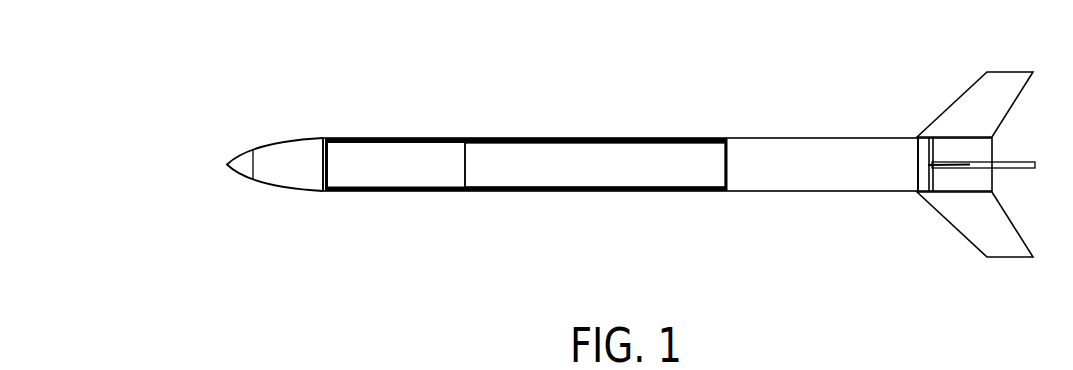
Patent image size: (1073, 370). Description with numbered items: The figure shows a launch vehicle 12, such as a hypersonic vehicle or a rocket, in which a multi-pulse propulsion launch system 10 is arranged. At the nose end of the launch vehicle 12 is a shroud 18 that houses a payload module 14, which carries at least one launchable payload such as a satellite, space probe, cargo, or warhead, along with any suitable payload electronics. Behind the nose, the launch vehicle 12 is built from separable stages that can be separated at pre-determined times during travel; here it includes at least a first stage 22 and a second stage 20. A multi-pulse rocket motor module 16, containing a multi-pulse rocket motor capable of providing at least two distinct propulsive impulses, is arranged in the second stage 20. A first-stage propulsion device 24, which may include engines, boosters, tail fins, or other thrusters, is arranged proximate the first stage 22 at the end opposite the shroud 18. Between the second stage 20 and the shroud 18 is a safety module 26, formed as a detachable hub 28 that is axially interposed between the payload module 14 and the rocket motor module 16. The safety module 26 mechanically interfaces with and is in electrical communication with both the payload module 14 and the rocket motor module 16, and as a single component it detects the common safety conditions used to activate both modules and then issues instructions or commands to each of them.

The multi-pulse propulsion launch system 10 is at (720, 213).
The launch vehicle 12 is at (429, 85).
The payload module 14 is at (295, 138).
The multi-pulse rocket motor module 16 is at (686, 128).
The shroud 18 is at (278, 172).
The second stage 20 is at (530, 173).
The first stage 22 is at (853, 193).
The first-stage propulsion device 24 is at (957, 108).
The safety module 26 is at (391, 188).
The detachable hub 28 is at (345, 173).